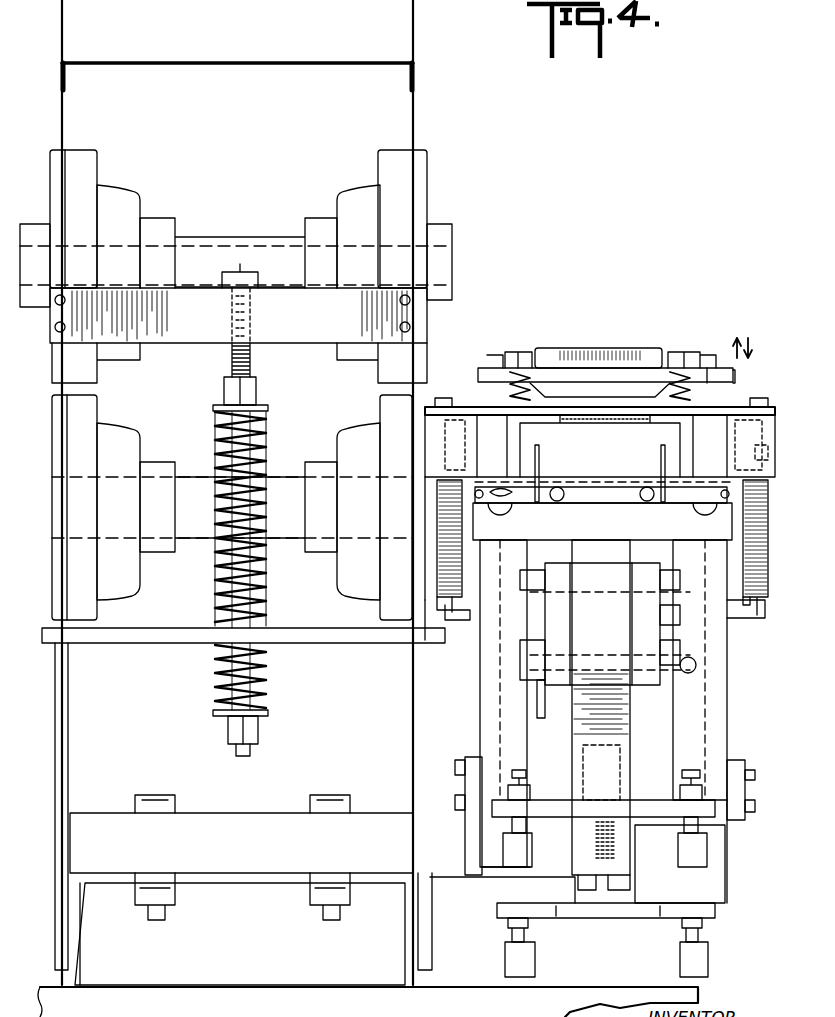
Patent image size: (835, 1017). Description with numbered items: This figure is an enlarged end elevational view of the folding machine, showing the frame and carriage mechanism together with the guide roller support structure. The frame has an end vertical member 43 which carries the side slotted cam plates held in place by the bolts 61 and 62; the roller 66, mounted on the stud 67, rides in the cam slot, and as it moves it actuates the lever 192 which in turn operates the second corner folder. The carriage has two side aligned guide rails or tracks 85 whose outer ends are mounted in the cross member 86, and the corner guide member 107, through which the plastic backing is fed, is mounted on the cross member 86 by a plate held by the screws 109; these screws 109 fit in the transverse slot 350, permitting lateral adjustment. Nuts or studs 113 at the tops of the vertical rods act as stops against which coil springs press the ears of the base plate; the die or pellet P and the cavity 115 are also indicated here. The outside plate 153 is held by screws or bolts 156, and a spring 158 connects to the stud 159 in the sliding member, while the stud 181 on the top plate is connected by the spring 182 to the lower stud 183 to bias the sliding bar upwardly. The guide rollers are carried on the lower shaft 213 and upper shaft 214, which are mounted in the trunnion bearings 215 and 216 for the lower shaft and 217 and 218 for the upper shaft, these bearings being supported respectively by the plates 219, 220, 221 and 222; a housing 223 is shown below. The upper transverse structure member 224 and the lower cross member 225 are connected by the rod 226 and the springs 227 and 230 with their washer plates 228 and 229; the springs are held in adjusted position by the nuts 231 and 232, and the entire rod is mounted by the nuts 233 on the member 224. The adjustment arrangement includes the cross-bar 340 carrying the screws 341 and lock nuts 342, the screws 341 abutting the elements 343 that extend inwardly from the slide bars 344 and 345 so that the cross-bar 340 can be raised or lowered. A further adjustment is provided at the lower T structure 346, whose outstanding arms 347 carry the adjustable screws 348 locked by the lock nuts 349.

The pellet or workpiece P is at (630, 338).
The end vertical member 43 is at (628, 728).
The bolt 61 is at (680, 590).
The bolt 62 is at (688, 672).
The roller 66 is at (548, 618).
The stud 67 is at (680, 618).
The guide rails or tracks 85 is at (505, 517).
The cross member 86 is at (592, 540).
The corner guide member 107 is at (663, 458).
The screws 109 is at (648, 490).
The nuts or studs 113 is at (680, 354).
The die cavity 115 is at (540, 354).
The outside plate 153 is at (746, 790).
The screws or bolts 156 is at (750, 806).
The spring 158 is at (765, 588).
The stud 159 is at (742, 620).
The stud 181 is at (450, 440).
The spring 182 is at (462, 578).
The lower stud 183 is at (462, 620).
The lever 192 is at (543, 718).
The lower shaft 213 is at (198, 540).
The upper shaft 214 is at (218, 236).
The trunnion bearing 215 is at (120, 434).
The trunnion bearing 216 is at (355, 425).
The trunnion bearing 217 is at (125, 188).
The trunnion bearing 218 is at (352, 188).
The plate 219 is at (55, 562).
The plate 220 is at (410, 600).
The plate 221 is at (50, 160).
The plate 222 is at (427, 172).
The housing 223 is at (240, 855).
The upper transverse structure member 224 is at (165, 333).
The cross member 225 is at (152, 645).
The rod 226 is at (268, 460).
The spring 227 is at (268, 588).
The washer plate 228 is at (268, 716).
The washer plate 229 is at (268, 406).
The spring 230 is at (268, 676).
The nut 231 is at (228, 740).
The nut 232 is at (224, 400).
The nuts 233 is at (255, 303).
The cross-bar 340 is at (492, 806).
The screws 341 is at (512, 826).
The lock nuts 342 is at (505, 795).
The elements 343 is at (520, 858).
The slide bar 344 is at (490, 850).
The slide bar 345 is at (720, 887).
The lower T structure 346 is at (598, 906).
The outstanding arms 347 is at (660, 906).
The adjustable screws 348 is at (510, 942).
The lock nuts 349 is at (508, 924).
The transverse slot 350 is at (605, 492).